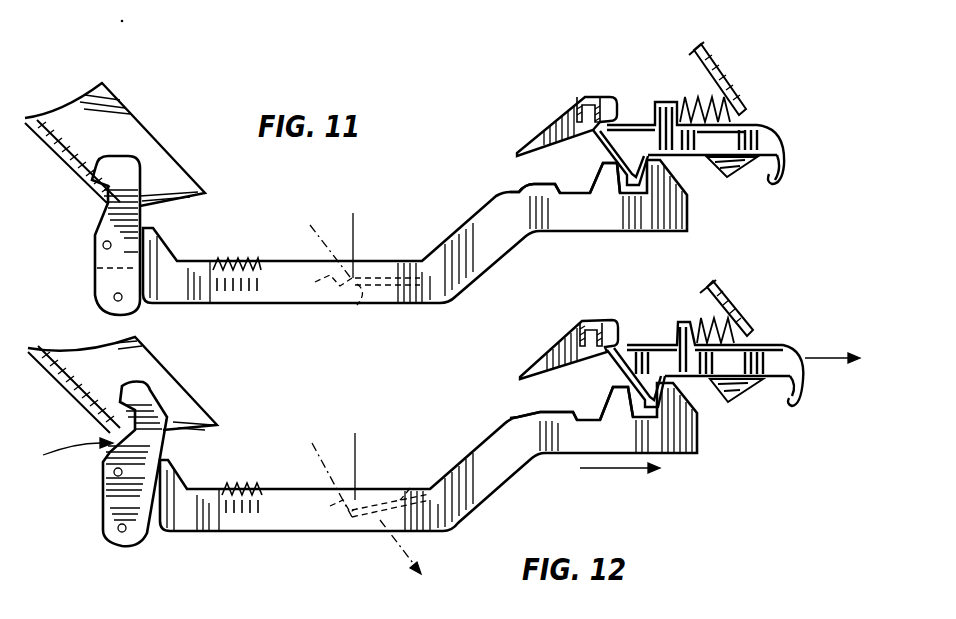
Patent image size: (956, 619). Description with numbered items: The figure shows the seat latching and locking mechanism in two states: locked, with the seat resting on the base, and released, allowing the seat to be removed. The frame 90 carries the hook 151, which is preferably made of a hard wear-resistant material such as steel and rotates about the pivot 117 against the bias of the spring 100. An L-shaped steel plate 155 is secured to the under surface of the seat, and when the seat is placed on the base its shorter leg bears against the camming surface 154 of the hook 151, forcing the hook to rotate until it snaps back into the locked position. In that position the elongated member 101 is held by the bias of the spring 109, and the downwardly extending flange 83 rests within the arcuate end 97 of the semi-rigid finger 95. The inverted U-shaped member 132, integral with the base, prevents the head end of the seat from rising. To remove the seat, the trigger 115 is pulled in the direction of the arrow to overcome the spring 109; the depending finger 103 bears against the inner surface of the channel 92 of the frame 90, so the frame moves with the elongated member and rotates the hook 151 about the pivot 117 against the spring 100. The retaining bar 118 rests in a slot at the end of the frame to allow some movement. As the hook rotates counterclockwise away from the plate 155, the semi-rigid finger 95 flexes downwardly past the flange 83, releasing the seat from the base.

In FIG. 11, the downwardly extending flange 83 is at (357, 250).
In FIG. 12, the downwardly extending flange 83 is at (358, 468).
In FIG. 11, the frame 90 is at (433, 234).
In FIG. 12, the frame 90 is at (440, 456).
In FIG. 11, the channel 92 is at (632, 197).
In FIG. 12, the channel 92 is at (647, 420).
In FIG. 11, the semi-rigid finger 95 is at (357, 308).
In FIG. 12, the semi-rigid finger 95 is at (410, 488).
In FIG. 11, the arcuate end 97 is at (312, 284).
In FIG. 12, the arcuate end 97 is at (328, 506).
In FIG. 11, the spring 100 is at (232, 260).
In FIG. 12, the spring 100 is at (253, 487).
In FIG. 11, the elongated member 101 is at (522, 188).
In FIG. 12, the elongated member 101 is at (565, 412).
In FIG. 11, the depending finger 103 is at (615, 178).
In FIG. 12, the depending finger 103 is at (630, 398).
In FIG. 11, the spring 109 is at (680, 97).
In FIG. 12, the spring 109 is at (707, 320).
In FIG. 11, the trigger 115 is at (785, 175).
In FIG. 12, the trigger 115 is at (793, 415).
In FIG. 11, the pivot 117 is at (112, 296).
In FIG. 12, the pivot 117 is at (117, 527).
In FIG. 11, the retaining bar 118 is at (102, 246).
In FIG. 12, the retaining bar 118 is at (113, 472).
In FIG. 11, the inverted U-shaped member 132 is at (592, 95).
In FIG. 12, the inverted U-shaped member 132 is at (588, 320).
In FIG. 11, the hook 151 is at (141, 186).
In FIG. 12, the hook 151 is at (163, 446).
In FIG. 11, the camming surface 154 is at (98, 168).
In FIG. 11, the L-shaped steel plate 155 is at (96, 172).
In FIG. 12, the L-shaped steel plate 155 is at (87, 398).